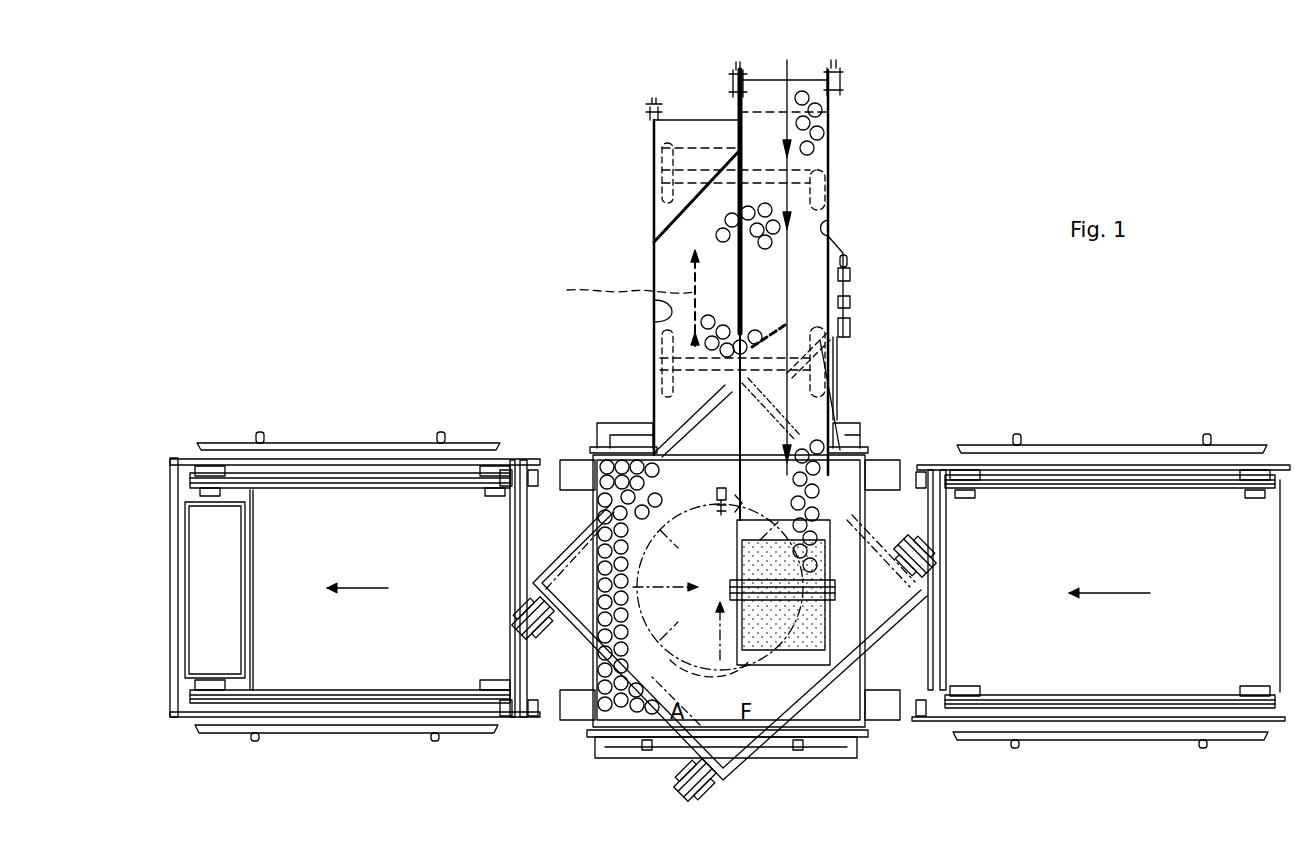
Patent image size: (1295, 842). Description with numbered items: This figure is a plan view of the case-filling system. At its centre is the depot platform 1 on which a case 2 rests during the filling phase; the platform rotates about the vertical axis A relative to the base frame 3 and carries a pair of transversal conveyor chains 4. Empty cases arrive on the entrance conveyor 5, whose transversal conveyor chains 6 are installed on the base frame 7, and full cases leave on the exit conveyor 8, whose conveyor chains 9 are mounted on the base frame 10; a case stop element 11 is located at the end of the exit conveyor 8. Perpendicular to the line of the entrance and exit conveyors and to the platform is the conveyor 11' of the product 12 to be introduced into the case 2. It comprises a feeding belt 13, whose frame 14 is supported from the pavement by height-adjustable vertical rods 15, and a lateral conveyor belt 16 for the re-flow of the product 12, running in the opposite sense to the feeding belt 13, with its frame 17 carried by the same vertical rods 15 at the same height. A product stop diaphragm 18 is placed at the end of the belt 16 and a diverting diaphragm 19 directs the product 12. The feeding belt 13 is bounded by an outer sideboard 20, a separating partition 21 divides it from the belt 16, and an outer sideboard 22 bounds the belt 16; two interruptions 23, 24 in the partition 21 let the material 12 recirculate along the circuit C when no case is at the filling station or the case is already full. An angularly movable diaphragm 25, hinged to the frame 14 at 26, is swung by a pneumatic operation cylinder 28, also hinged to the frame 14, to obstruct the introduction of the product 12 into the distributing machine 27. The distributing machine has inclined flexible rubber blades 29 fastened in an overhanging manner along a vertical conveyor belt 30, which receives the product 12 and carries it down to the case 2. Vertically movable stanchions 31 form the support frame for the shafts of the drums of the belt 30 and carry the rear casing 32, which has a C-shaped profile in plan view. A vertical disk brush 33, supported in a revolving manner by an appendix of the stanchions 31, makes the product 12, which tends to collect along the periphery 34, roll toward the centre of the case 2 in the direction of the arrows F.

The depot platform 1 is at (588, 438).
The case 2 is at (890, 452).
The base frame 3 is at (610, 428).
The pair of transversal conveyor chains 4 is at (903, 455).
The entrance conveyor 5 is at (1060, 442).
The transversal conveyor chains 6 is at (1165, 470).
The base frame 7 is at (1118, 470).
The exit conveyor 8 is at (347, 437).
The conveyor chains 9 is at (305, 478).
The base frame 10 is at (390, 470).
The case stop element 11 is at (218, 529).
The product conveyor 11' is at (828, 267).
The product 12 is at (825, 125).
The feeding belt 13 is at (833, 210).
The frame 14 is at (830, 139).
The vertical rods 15 is at (657, 194).
The lateral conveyor belt 16 is at (675, 278).
The frame 17 is at (660, 152).
The product stop diaphragm 18 is at (680, 482).
The product diverting diaphragm 19 is at (652, 245).
The outer sideboard 20 is at (842, 238).
The separating partition 21 is at (746, 269).
The outer sideboard 22 is at (665, 321).
The interruption of the partition 23 is at (748, 335).
The interruption of the partition 24 is at (737, 175).
The angularly movable diaphragm 25 is at (848, 371).
The hinge 26 is at (850, 334).
The distributing machine 27 is at (851, 593).
The pneumatic operation cylinder 28 is at (850, 277).
The inclined flexible rubber blades 29 is at (752, 569).
The vertical conveyor belt 30 is at (835, 628).
The vertically movable stanchions 31 is at (835, 561).
The rear casing 32 is at (752, 652).
The vertical disk brush 33 is at (720, 488).
The periphery 34 is at (604, 653).